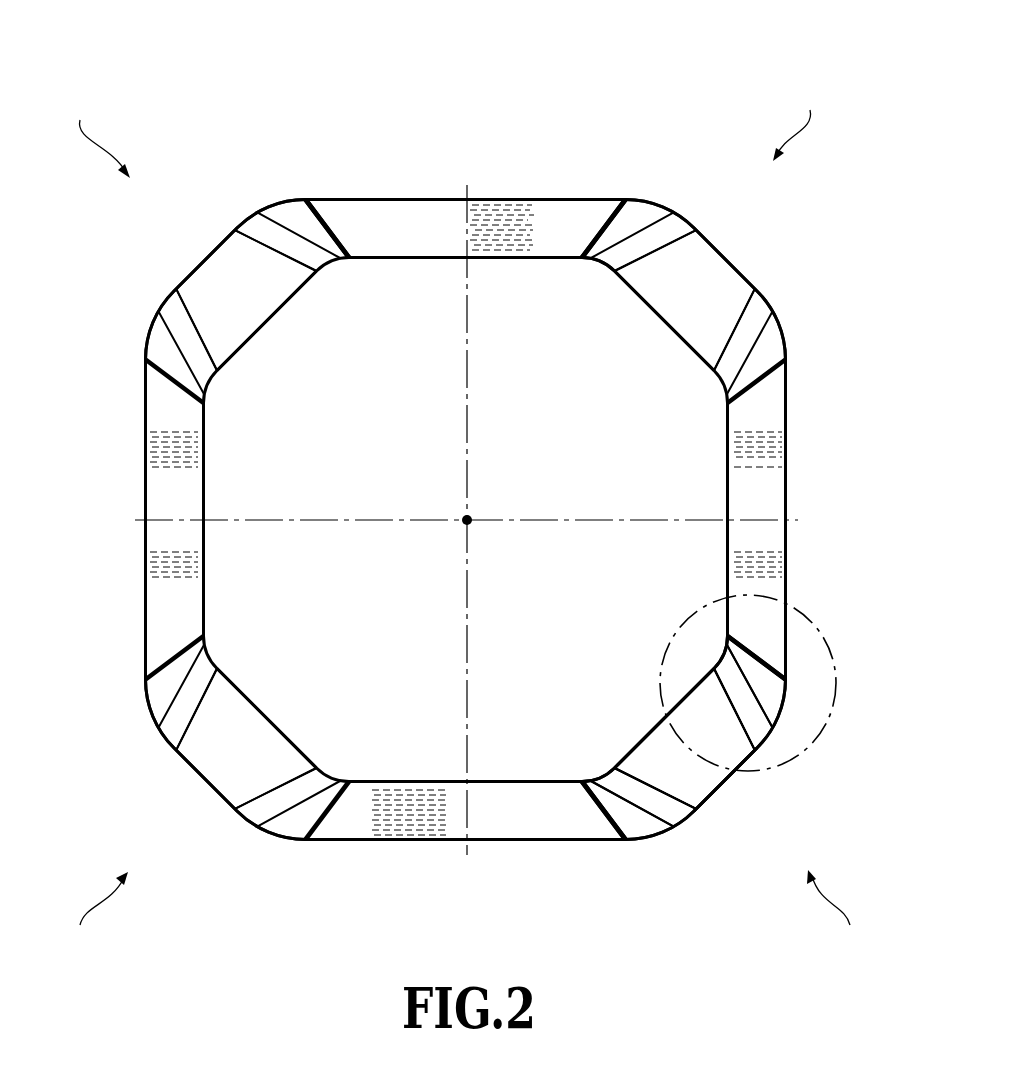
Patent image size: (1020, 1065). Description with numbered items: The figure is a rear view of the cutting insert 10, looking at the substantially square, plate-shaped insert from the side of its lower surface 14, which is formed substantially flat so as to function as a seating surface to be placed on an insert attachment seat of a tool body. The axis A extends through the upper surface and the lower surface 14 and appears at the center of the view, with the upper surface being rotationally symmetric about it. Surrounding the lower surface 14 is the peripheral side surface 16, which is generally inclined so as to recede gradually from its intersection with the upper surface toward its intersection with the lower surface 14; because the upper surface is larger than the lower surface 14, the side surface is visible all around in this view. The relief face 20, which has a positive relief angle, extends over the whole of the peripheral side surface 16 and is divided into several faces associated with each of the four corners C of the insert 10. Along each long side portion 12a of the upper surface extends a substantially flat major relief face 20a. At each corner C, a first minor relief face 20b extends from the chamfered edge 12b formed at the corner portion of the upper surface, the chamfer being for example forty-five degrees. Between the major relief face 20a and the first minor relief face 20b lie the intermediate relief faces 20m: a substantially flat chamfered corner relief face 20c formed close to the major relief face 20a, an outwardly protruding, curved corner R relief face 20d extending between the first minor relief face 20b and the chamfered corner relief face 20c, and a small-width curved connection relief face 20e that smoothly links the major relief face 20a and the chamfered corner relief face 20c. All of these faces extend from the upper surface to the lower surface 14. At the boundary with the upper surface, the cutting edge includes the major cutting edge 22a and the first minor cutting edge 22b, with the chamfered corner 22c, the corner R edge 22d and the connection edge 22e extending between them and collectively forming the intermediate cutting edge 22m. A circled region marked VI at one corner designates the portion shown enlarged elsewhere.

The cutting insert 10 is at (548, 91).
The long side portion 12a is at (570, 215).
The chamfered edge 12b is at (197, 259).
The lower surface 14 is at (527, 275).
The peripheral side surface 16 is at (378, 225).
The relief face 20 is at (481, 210).
The major relief face 20a is at (430, 225).
The first minor relief face 20b is at (237, 323).
The chamfered corner relief face 20c is at (300, 204).
The corner R relief face 20d is at (202, 365).
The connection relief face 20e is at (308, 223).
The intermediate relief face 20m is at (578, 258).
The major cutting edge 22a is at (787, 553).
The first minor cutting edge 22b is at (732, 773).
The chamfered corner 22c is at (782, 703).
The corner R edge 22d is at (771, 740).
The connection edge 22e is at (784, 673).
The intermediate cutting edge 22m is at (782, 690).
The axis A is at (470, 517).
The corner C is at (468, 518).
The enlarged view region VI is at (837, 633).